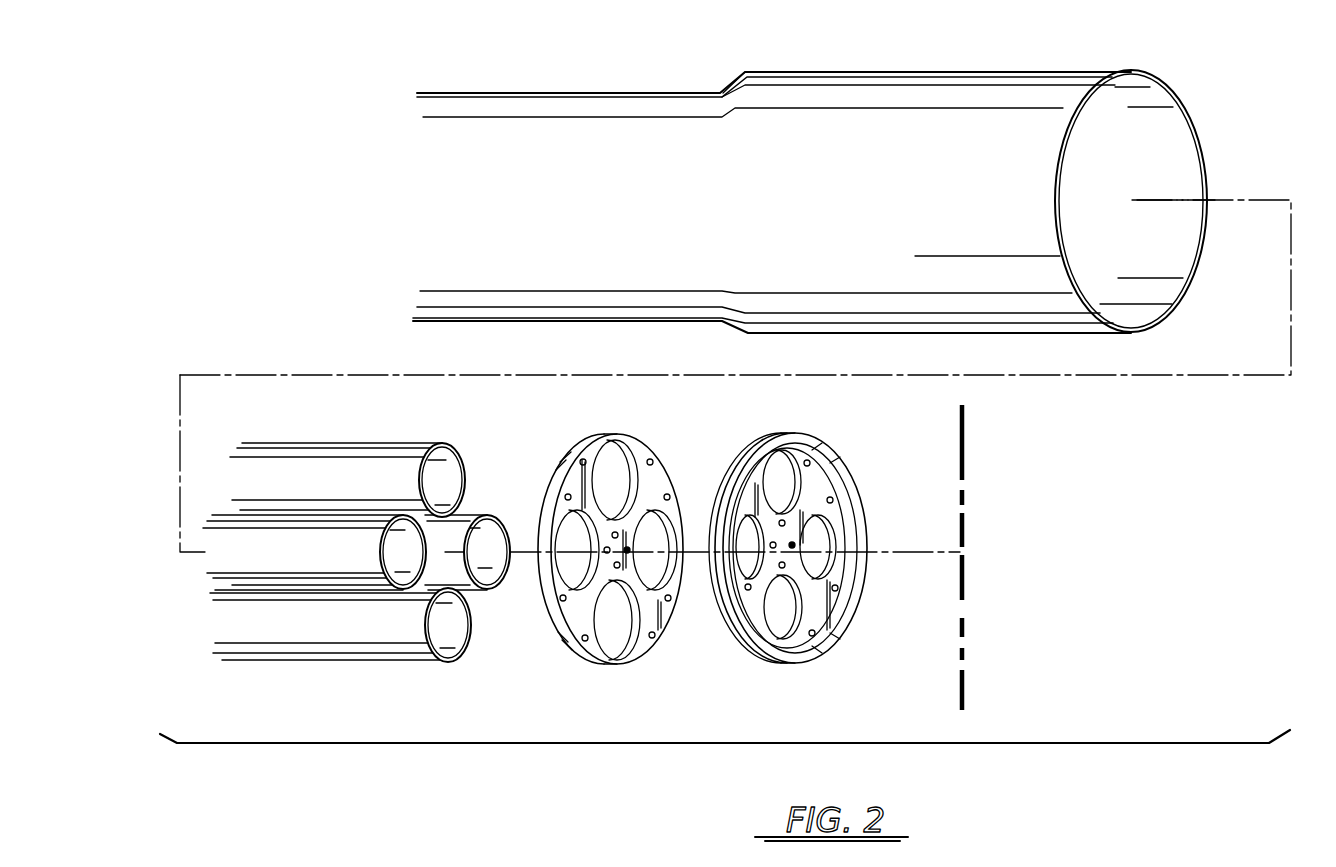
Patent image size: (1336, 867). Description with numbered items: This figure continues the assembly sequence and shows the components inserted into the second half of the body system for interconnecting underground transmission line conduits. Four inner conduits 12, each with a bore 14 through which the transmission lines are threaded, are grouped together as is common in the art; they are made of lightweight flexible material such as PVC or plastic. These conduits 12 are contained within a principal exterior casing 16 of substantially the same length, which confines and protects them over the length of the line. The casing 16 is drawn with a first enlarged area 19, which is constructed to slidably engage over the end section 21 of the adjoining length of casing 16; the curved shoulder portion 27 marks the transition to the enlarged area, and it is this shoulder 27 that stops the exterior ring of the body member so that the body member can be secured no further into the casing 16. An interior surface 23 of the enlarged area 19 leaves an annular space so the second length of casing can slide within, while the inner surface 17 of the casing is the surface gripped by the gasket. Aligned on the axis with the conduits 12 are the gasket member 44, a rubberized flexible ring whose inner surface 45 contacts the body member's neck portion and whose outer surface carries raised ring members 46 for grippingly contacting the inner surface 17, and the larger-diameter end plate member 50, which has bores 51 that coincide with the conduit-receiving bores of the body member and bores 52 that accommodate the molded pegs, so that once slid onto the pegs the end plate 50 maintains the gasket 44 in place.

The transmission line conduits 12 is at (370, 465).
The bore 14 is at (367, 554).
The exterior casing 16 is at (834, 175).
The inner surface 17 is at (1178, 240).
The first enlarged area 19 is at (928, 217).
The end section 21 is at (1160, 133).
The interior surface 23 is at (1140, 72).
The curved shoulder portion 27 is at (745, 78).
The gasket member 44 is at (810, 575).
The inner surface 45 is at (853, 507).
The raised ring members 46 is at (730, 613).
The end plate member 50 is at (626, 549).
The bores 51 is at (617, 470).
The bores 52 is at (670, 497).